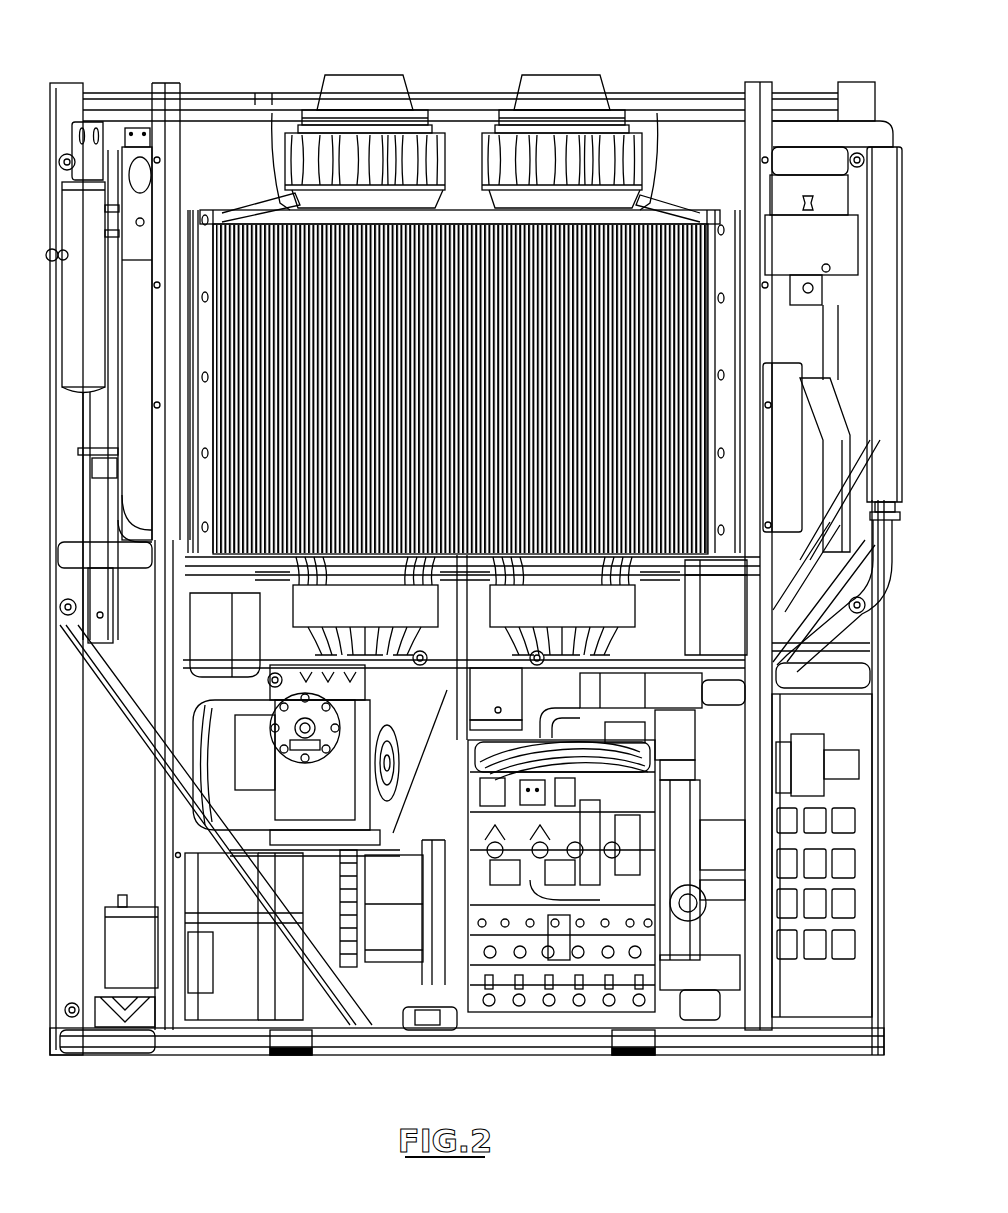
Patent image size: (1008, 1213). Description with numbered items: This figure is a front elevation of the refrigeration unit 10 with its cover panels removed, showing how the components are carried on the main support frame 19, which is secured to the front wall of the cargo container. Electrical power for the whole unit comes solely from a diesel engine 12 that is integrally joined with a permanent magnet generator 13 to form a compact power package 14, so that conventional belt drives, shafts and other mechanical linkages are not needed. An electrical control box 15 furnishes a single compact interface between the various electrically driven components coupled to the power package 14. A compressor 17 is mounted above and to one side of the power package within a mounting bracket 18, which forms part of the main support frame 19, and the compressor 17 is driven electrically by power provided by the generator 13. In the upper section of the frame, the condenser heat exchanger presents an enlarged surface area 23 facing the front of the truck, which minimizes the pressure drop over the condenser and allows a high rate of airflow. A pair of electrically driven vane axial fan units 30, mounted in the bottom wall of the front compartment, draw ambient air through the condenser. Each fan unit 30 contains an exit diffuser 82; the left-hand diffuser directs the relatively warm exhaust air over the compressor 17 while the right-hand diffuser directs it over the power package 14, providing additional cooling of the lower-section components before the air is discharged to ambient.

The refrigeration unit 10 is at (742, 59).
The diesel engine 12 is at (702, 928).
The permanent magnet generator 13 is at (388, 943).
The power package 14 is at (568, 1022).
The electrical control box 15 is at (867, 872).
The compressor 17 is at (200, 790).
The mounting bracket 18 is at (432, 1010).
The main support frame 19 is at (153, 866).
The enlarged surface area 23 is at (258, 247).
The vane axial fan units 30 is at (352, 609).
The exit diffuser 82 is at (330, 656).